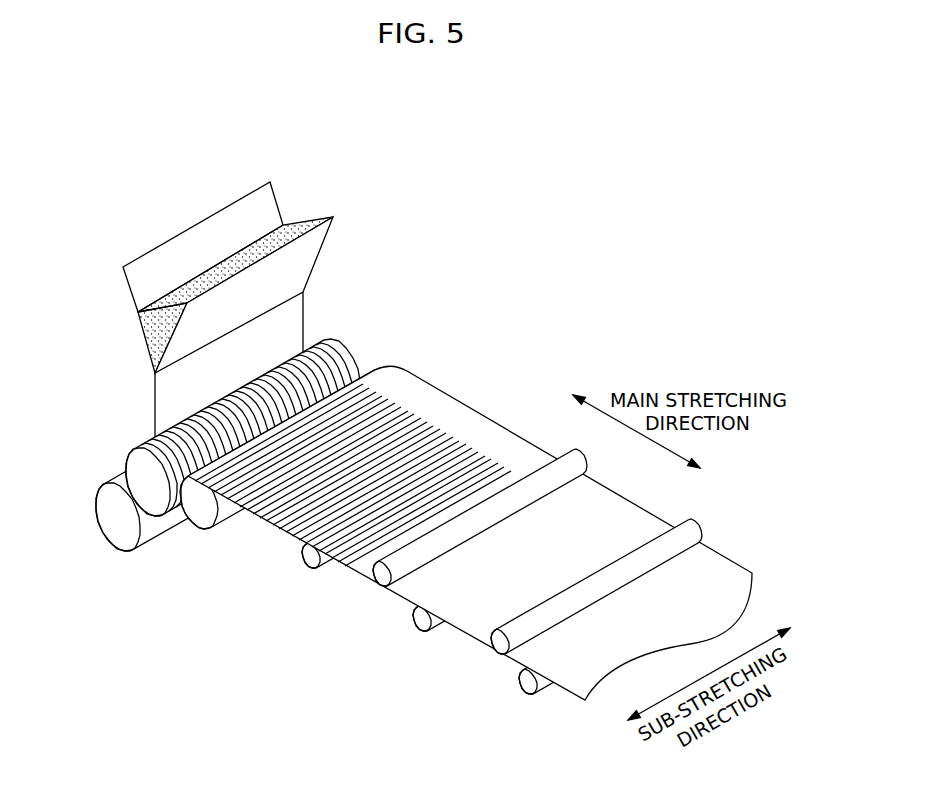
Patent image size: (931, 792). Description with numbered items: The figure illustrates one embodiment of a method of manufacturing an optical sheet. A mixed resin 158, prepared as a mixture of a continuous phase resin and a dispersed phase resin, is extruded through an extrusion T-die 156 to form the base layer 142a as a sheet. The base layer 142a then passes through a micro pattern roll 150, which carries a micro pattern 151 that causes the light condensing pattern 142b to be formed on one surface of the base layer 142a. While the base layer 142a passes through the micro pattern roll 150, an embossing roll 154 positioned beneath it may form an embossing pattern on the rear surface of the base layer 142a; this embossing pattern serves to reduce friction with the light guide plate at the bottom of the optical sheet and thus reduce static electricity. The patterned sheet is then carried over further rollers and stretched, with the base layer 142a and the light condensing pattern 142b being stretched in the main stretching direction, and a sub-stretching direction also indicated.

The base layer 142a is at (298, 322).
The light condensing pattern 142b is at (402, 402).
The micro pattern roll 150 is at (140, 472).
The micro pattern 151 is at (330, 357).
The embossing roll 154 is at (118, 526).
The extrusion T-die 156 is at (268, 200).
The mixed resin 158 is at (141, 332).